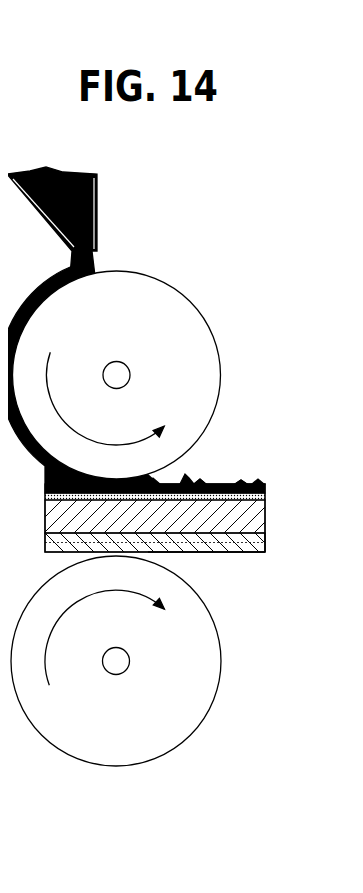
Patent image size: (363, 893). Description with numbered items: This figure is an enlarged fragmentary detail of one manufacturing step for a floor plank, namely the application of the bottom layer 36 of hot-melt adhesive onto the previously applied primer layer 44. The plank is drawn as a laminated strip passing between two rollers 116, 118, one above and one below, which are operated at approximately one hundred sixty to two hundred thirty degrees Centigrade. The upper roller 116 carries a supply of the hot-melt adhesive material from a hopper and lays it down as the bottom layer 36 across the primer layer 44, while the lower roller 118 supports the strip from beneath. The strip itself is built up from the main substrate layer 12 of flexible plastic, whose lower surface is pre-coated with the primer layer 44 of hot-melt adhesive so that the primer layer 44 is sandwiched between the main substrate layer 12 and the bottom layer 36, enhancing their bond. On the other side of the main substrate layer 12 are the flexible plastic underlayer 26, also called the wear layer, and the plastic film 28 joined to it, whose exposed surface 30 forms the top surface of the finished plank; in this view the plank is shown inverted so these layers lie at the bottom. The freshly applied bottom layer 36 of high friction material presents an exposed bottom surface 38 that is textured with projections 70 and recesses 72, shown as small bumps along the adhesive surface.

The roller 116 is at (158, 271).
The roller 118 is at (185, 726).
The exposed bottom surface 38 is at (179, 474).
The recesses 72 is at (215, 472).
The projections 70 is at (232, 478).
The bottom layer 36 is at (260, 481).
The primer layer 44 is at (258, 491).
The main substrate layer 12 is at (259, 511).
The underlayer 26 is at (258, 533).
The exposed surface 30 is at (205, 546).
The plastic film 28 is at (261, 546).